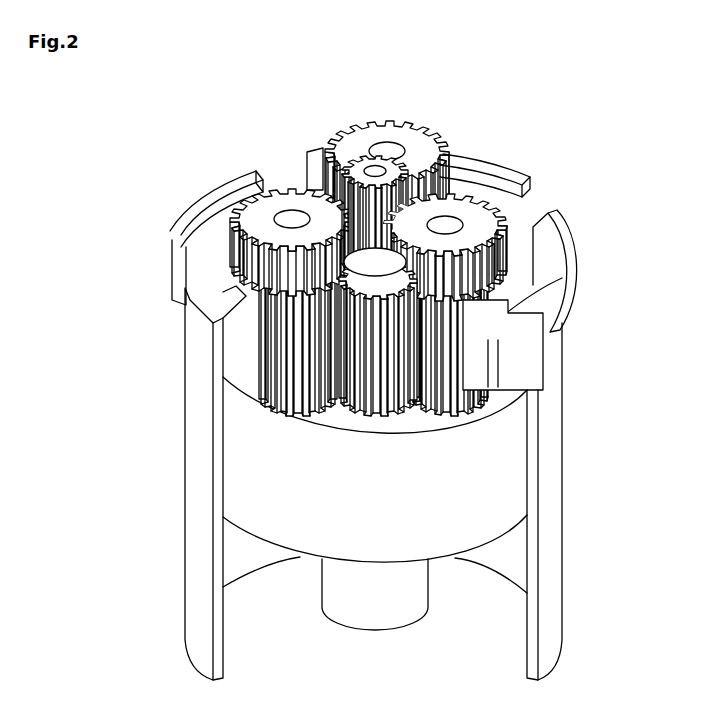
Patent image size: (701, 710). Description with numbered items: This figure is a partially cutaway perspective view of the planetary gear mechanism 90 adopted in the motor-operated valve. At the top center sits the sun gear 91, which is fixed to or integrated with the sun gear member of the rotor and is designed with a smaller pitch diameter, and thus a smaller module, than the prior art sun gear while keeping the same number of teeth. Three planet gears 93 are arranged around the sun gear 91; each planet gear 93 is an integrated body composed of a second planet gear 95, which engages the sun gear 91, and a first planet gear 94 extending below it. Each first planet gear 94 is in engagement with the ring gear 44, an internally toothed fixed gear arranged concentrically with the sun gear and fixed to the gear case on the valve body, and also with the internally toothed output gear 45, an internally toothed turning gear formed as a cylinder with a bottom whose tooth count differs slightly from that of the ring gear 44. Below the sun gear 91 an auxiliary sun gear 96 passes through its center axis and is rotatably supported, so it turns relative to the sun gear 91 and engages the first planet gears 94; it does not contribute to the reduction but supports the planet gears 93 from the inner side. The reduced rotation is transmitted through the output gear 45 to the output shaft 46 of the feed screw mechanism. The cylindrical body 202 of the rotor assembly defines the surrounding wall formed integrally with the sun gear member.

The planetary gear mechanism 90 is at (595, 122).
The sun gear 91 is at (387, 158).
The planet gear 93 is at (286, 184).
The second planet gear 95 is at (279, 193).
The first planet gear 94 is at (290, 370).
The auxiliary sun gear 96 is at (357, 410).
The ring gear 44 is at (213, 247).
The internally toothed output gear 45 is at (505, 492).
The output shaft 46 is at (402, 600).
The cylindrical body 202 is at (550, 587).